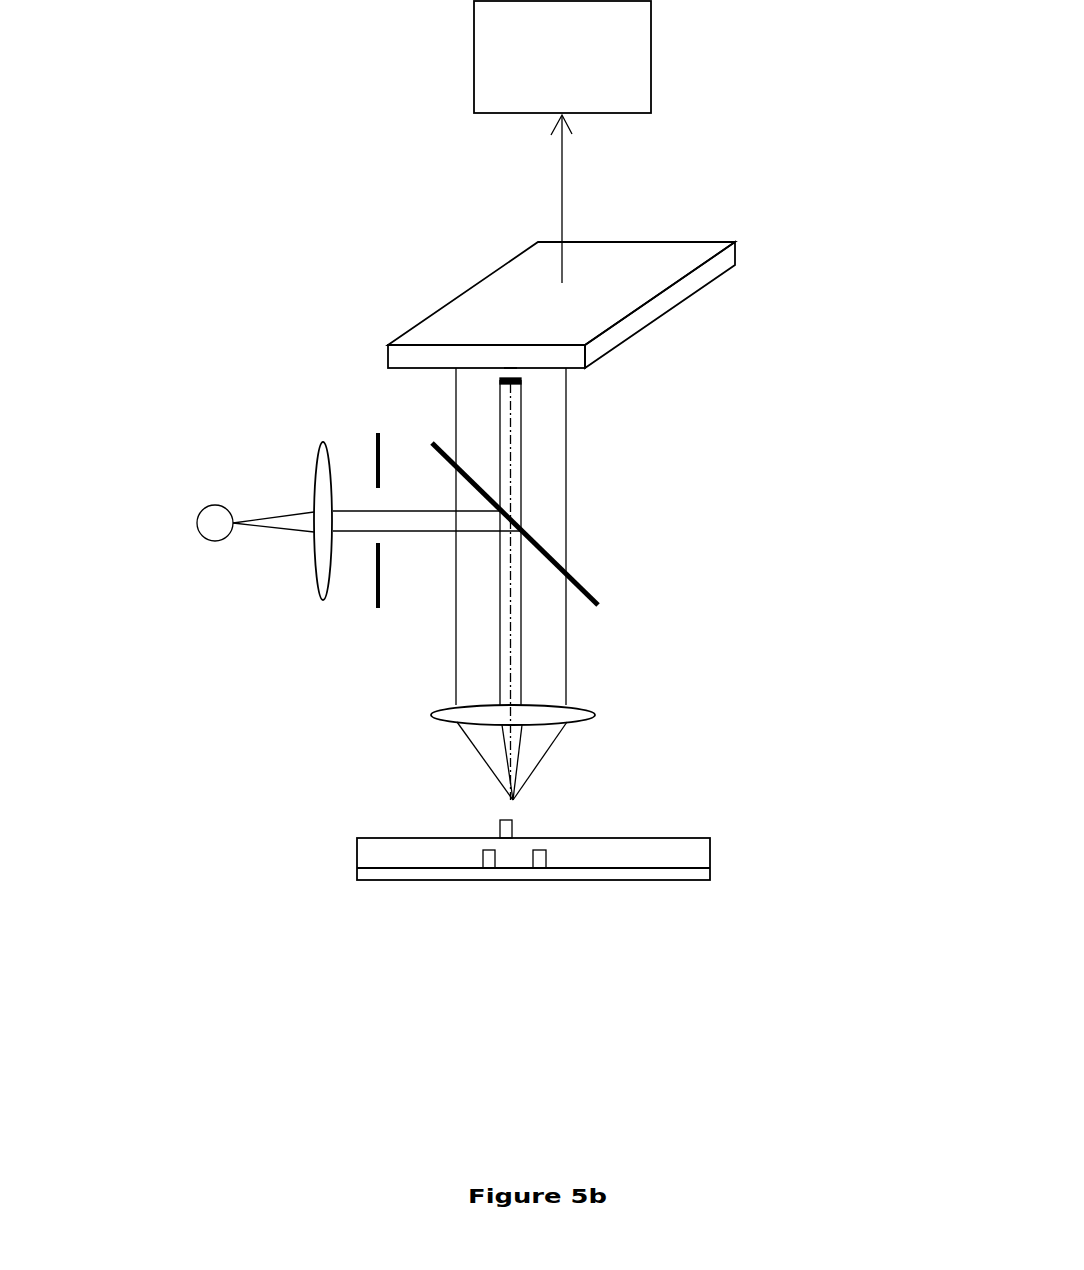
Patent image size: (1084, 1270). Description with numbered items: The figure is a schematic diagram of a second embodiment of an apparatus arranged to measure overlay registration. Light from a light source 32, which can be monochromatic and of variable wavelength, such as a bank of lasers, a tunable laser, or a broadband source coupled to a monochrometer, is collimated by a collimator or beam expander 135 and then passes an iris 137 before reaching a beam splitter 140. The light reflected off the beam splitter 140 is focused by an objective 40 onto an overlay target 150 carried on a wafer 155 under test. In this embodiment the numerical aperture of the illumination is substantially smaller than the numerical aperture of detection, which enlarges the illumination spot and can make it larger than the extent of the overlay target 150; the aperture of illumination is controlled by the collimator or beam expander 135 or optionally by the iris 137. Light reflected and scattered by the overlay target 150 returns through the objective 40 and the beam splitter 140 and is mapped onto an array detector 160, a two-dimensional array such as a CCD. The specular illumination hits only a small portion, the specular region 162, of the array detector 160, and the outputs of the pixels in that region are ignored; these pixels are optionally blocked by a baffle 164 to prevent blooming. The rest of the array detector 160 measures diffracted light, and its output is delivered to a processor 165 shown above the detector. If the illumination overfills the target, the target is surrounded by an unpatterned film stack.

The processor 165 is at (562, 142).
The array detector 160 is at (752, 253).
The specular region 162 is at (510, 368).
The baffle 164 is at (520, 382).
The beam splitter 140 is at (610, 588).
The light source 32 is at (197, 498).
The collimator or beam expander 135 is at (307, 588).
The iris 137 is at (365, 418).
The objective 40 is at (612, 723).
The wafer 155 is at (760, 877).
The overlay target 150 is at (513, 848).